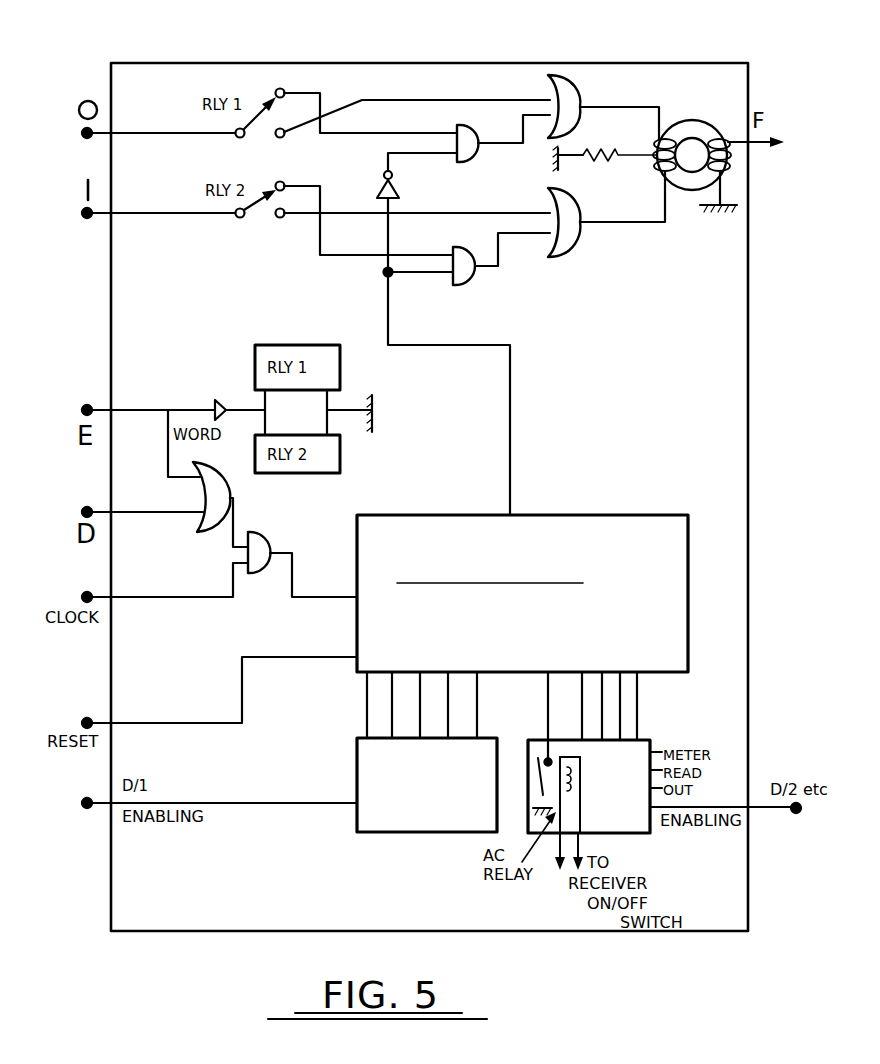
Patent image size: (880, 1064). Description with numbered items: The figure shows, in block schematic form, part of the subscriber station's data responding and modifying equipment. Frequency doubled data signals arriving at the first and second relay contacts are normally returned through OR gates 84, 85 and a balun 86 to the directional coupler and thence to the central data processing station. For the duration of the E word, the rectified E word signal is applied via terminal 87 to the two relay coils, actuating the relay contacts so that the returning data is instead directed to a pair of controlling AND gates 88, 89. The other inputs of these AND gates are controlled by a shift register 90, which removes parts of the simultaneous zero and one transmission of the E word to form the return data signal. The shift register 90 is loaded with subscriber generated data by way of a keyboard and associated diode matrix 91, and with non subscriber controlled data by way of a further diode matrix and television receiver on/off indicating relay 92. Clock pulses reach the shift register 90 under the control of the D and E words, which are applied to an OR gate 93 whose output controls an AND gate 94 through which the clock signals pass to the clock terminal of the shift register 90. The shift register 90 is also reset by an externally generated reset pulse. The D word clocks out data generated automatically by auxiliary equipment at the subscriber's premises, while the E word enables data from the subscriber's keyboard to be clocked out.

The OR gate 84 is at (566, 88).
The OR gate 85 is at (570, 207).
The balun 86 is at (680, 178).
The terminal 87 is at (95, 407).
The controlling AND gate 88 is at (462, 138).
The controlling AND gate 89 is at (465, 275).
The shift register 90 is at (442, 550).
The keyboard and associated diode matrix 91 is at (368, 780).
The diode matrix and television receiver on/off indicating relay 92 is at (532, 741).
The OR gate 93 is at (213, 497).
The AND gate 94 is at (258, 542).